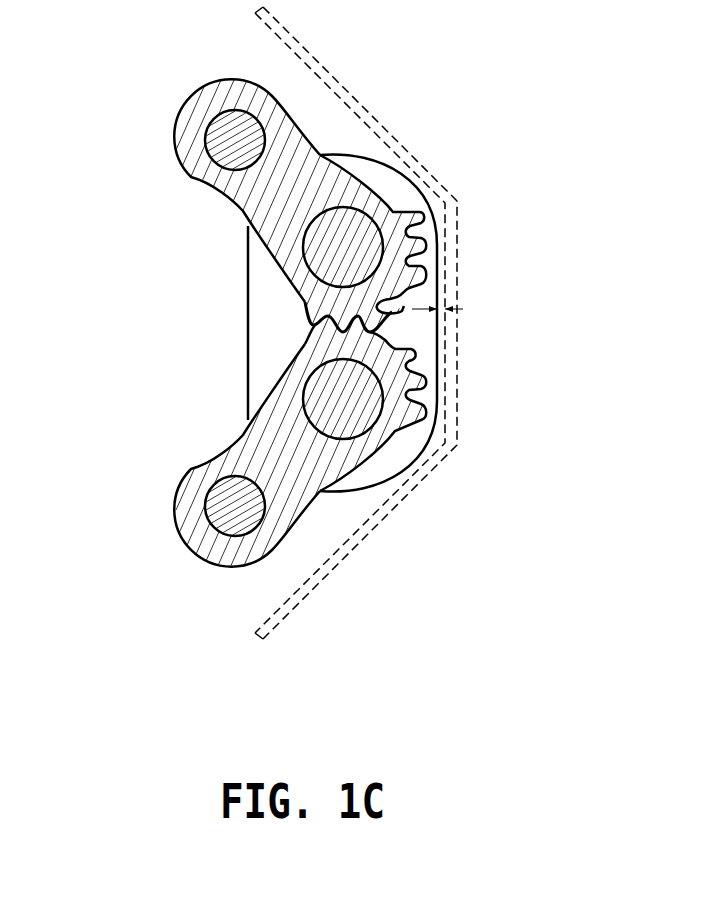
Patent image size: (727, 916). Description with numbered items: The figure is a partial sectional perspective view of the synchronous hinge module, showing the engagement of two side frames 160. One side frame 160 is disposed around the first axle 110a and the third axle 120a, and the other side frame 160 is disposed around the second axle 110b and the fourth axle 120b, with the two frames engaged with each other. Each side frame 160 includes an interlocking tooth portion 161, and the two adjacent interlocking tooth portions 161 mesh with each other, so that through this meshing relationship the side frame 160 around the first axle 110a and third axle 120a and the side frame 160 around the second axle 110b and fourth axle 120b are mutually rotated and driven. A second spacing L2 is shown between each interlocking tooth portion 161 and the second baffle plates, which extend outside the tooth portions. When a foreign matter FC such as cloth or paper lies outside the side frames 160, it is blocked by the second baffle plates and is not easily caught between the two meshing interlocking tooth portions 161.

The first axle 110a is at (337, 253).
The second axle 110b is at (332, 402).
The third axle 120a is at (220, 125).
The fourth axle 120b is at (220, 518).
The side frame 160 is at (218, 182).
The interlocking tooth portion 161 is at (323, 328).
The second spacing L2 is at (437, 312).
The foreign matter FC is at (452, 385).